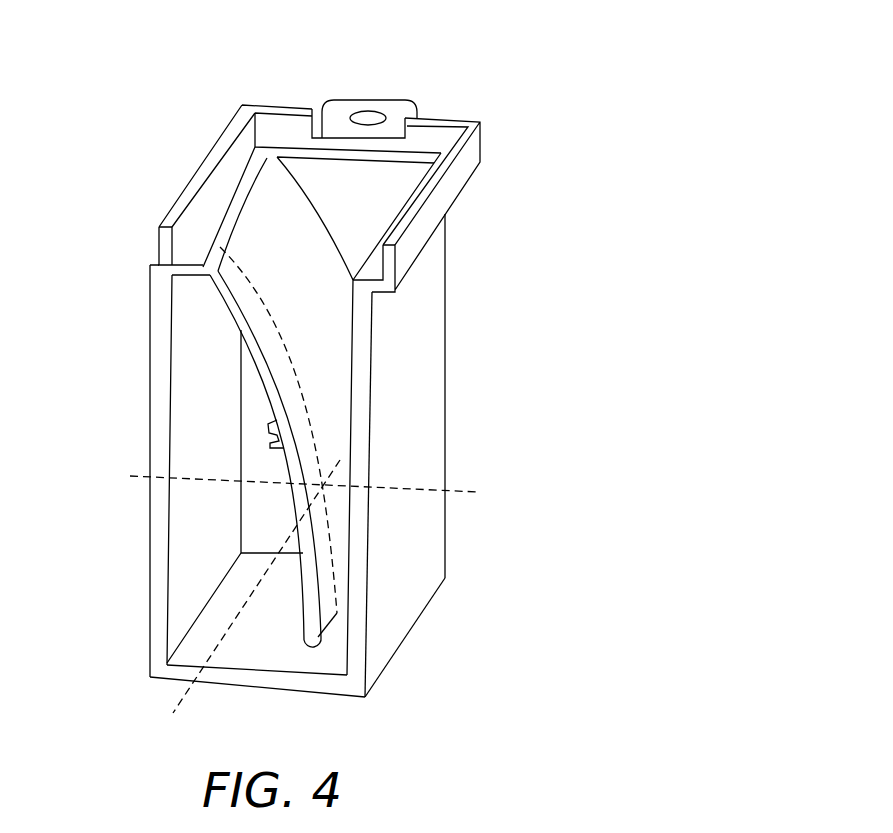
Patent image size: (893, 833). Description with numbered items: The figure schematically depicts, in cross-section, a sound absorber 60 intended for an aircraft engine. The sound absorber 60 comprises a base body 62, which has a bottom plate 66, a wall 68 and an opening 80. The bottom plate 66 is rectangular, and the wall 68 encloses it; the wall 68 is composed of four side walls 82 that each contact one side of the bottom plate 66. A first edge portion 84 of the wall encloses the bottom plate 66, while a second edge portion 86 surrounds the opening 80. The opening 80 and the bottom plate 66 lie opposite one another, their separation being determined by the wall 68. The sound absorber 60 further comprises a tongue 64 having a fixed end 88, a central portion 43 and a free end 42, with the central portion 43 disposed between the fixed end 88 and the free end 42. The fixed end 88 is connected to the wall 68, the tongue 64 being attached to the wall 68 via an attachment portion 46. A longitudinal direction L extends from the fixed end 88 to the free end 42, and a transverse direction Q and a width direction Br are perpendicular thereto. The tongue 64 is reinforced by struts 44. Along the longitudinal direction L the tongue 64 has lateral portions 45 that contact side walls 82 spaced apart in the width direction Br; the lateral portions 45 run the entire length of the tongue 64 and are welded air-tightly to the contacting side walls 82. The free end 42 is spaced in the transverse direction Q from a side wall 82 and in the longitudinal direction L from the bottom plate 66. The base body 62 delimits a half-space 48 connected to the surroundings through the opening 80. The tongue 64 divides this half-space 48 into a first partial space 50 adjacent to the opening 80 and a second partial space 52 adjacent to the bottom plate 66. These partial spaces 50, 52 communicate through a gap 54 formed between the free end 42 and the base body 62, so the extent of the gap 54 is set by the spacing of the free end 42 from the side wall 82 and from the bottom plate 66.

The free end 42 is at (311, 650).
The central portion 43 is at (259, 370).
The struts 44 is at (270, 443).
The lateral portions 45 is at (338, 252).
The attachment portion 46 is at (250, 223).
The half-space 48 is at (351, 245).
The first partial space 50 is at (366, 209).
The second partial space 52 is at (280, 535).
The gap 54 is at (330, 650).
The sound absorber 60 is at (146, 226).
The base body 62 is at (437, 406).
The tongue 64 is at (217, 229).
The bottom plate 66 is at (248, 678).
The wall 68 is at (436, 517).
The opening 80 is at (390, 188).
The side walls 82 is at (329, 170).
The first edge portion 84 is at (380, 646).
The second edge portion 86 is at (452, 171).
The fixed end 88 is at (206, 279).
The longitudinal direction L is at (268, 304).
The transverse direction Q is at (316, 491).
The width direction Br is at (241, 591).